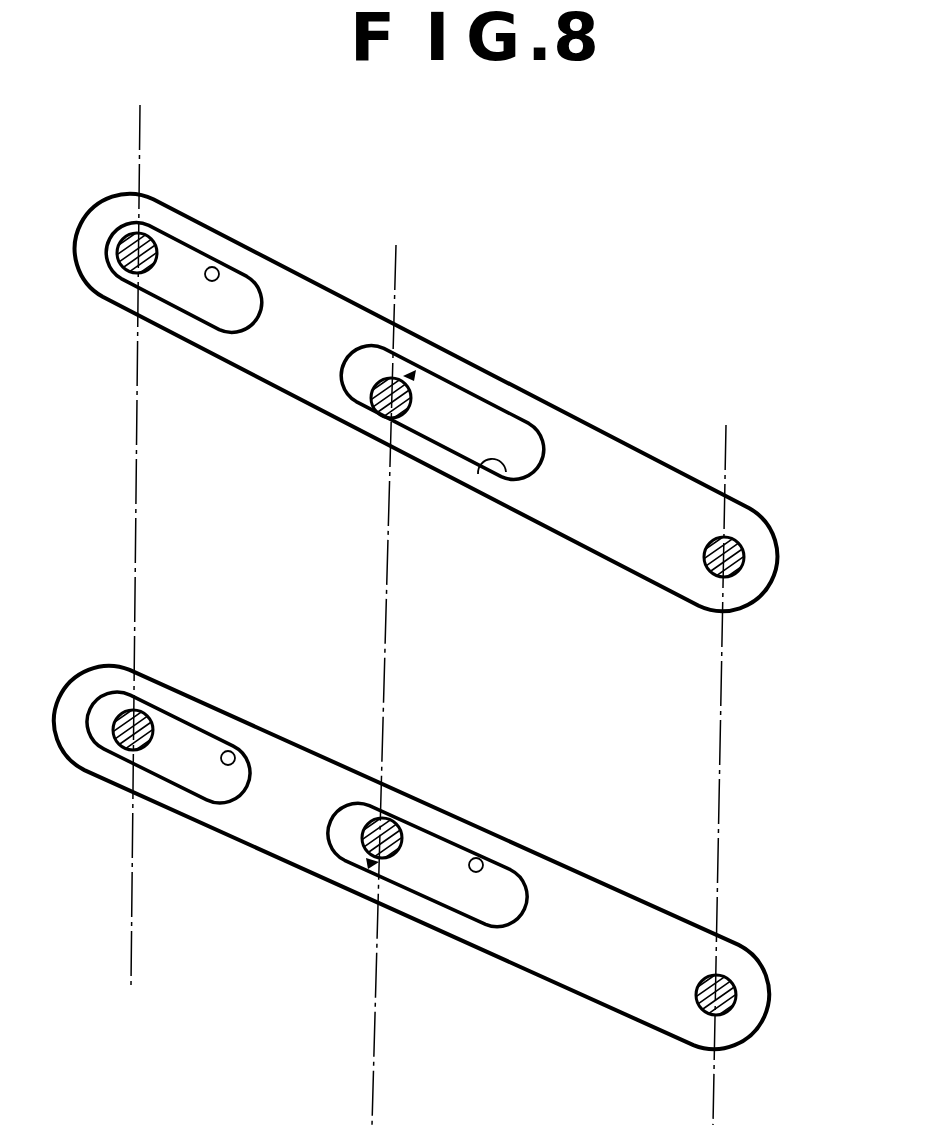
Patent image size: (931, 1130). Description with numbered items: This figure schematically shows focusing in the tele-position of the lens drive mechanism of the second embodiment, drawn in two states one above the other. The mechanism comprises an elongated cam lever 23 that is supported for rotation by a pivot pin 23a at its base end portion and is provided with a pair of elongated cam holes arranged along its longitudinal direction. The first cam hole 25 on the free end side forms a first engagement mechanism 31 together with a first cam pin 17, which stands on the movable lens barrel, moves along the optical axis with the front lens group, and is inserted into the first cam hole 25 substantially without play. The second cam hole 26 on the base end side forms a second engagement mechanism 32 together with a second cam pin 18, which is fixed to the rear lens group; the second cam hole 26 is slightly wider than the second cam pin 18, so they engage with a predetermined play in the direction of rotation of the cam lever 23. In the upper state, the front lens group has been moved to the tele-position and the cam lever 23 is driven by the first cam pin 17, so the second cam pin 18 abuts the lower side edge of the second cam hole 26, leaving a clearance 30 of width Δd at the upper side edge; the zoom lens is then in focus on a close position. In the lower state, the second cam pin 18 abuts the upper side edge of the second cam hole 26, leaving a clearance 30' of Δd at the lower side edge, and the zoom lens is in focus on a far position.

The cam lever 23 is at (627, 485).
The pivot pin 23a is at (742, 540).
The first cam pin 17 is at (162, 244).
The first cam hole 25 is at (218, 266).
The first engagement mechanism 31 is at (282, 173).
The second cam pin 18 is at (398, 414).
The second cam hole 26 is at (503, 478).
The second engagement mechanism 32 is at (510, 566).
The clearance 30 is at (462, 336).
The clearance 30' is at (321, 908).